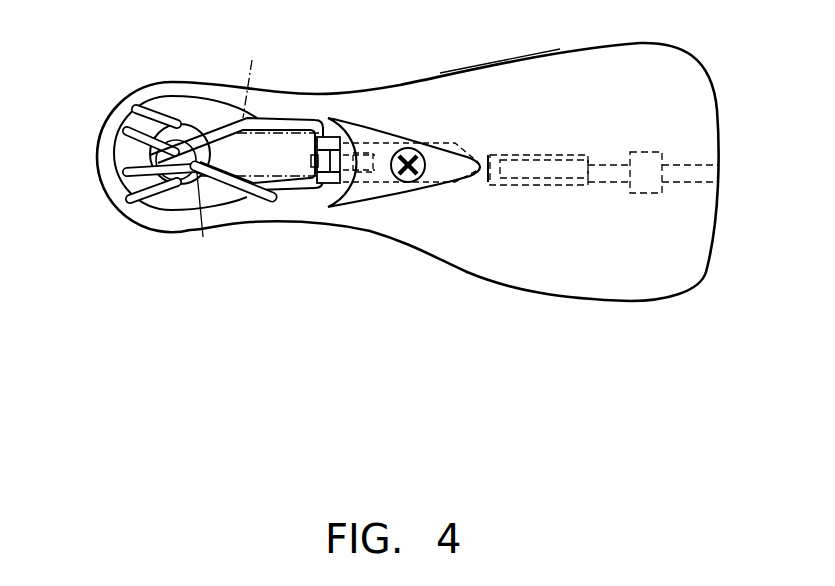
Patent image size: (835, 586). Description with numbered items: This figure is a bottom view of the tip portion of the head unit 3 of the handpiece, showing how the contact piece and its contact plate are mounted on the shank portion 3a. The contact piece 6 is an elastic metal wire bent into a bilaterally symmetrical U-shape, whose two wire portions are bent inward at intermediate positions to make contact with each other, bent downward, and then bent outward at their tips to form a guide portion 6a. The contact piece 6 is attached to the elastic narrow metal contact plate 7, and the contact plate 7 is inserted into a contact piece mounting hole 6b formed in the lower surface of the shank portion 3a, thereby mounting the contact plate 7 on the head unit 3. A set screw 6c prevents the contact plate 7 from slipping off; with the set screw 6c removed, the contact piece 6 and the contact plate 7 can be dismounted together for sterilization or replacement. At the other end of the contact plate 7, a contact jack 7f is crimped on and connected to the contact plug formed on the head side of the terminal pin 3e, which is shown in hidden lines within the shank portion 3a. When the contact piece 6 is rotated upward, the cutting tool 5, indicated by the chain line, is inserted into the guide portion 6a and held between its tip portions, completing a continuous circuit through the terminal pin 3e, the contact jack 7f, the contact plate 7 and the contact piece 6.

The head unit 3 is at (465, 272).
The shank portion 3a is at (501, 87).
The terminal pin 3e is at (648, 157).
The cutting tool 5 is at (200, 180).
The contact piece 6 is at (278, 128).
The guide portion 6a is at (133, 158).
The contact piece mounting hole 6b is at (342, 192).
The set screw 6c is at (413, 148).
The contact plate 7 is at (322, 183).
The contact jack 7f is at (492, 185).